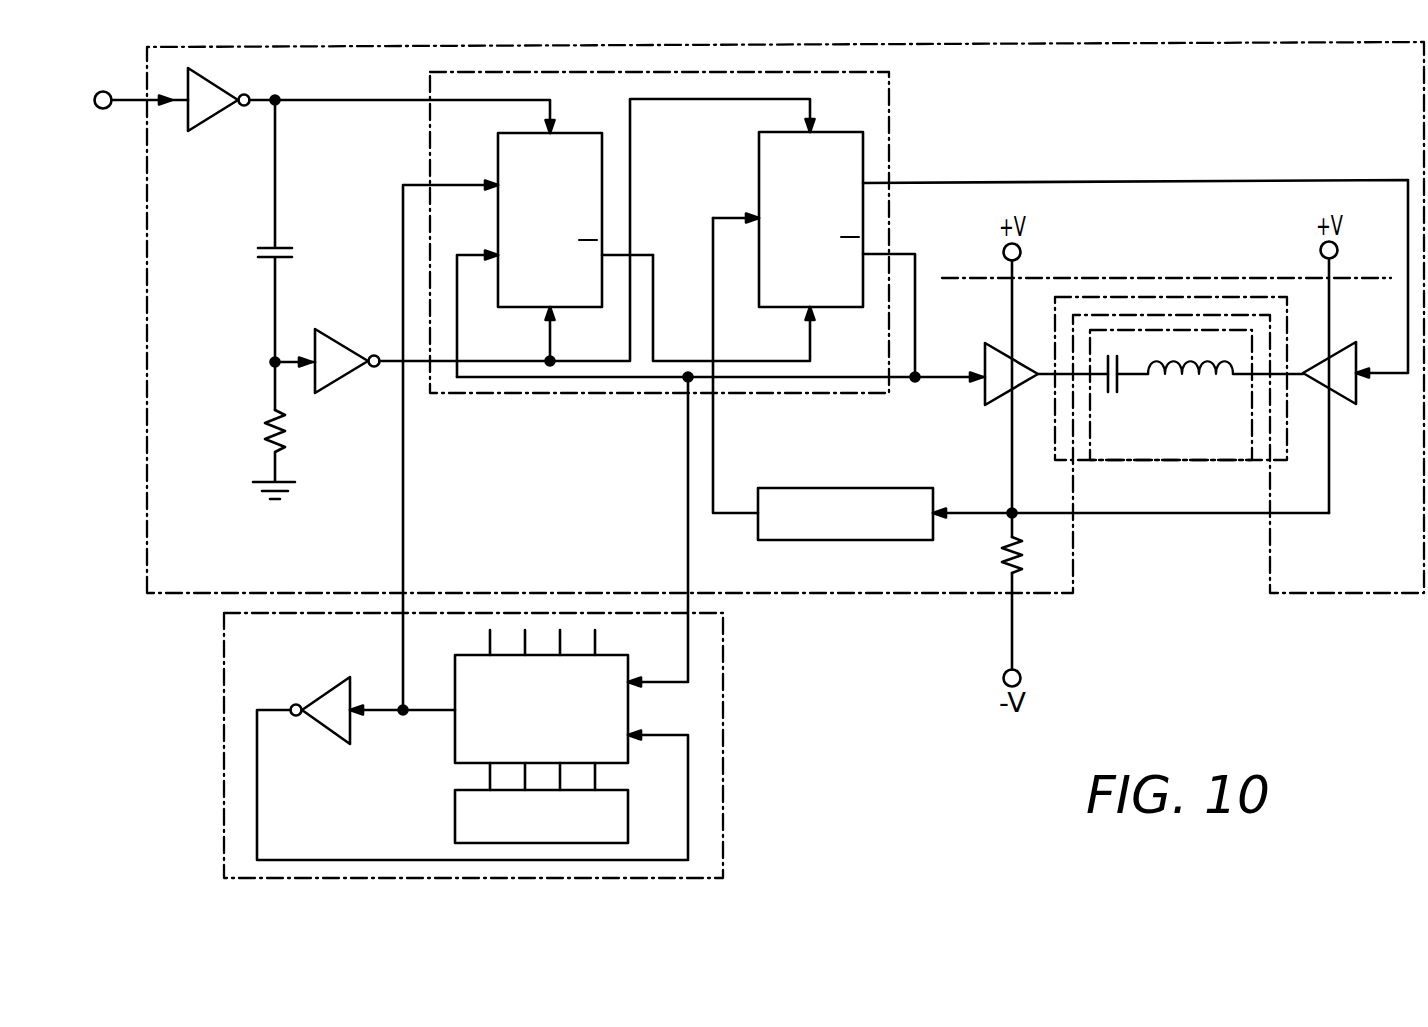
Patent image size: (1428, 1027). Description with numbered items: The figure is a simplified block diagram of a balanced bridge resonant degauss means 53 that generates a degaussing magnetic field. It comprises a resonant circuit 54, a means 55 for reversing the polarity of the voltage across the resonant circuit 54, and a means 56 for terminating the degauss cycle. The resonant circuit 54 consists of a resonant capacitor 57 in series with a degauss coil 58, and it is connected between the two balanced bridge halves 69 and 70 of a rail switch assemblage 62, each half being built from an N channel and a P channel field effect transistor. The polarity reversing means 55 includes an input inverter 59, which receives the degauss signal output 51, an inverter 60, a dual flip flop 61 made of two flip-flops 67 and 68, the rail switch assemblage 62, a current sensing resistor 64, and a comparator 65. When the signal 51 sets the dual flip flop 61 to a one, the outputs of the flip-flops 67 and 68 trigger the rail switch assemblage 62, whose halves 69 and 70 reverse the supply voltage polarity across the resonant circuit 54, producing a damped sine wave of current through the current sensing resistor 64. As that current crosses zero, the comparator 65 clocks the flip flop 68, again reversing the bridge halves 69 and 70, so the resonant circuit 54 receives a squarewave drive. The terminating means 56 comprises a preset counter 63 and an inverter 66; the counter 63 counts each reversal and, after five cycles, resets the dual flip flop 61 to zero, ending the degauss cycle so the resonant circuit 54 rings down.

The output of degauss signal generating means 51 is at (103, 109).
The balanced bridge resonant degauss means 53 is at (1184, 729).
The resonant circuit 54 is at (1183, 461).
The means for reversing the polarity of the voltage across the resonant circuit 55 is at (1318, 597).
The means for terminating the degauss cycle 56 is at (740, 711).
The resonant capacitor 57 is at (1117, 393).
The degauss coil 58 is at (1190, 382).
The input inverter 59 is at (206, 118).
The inverter 60 is at (338, 378).
The dual flip flop 61 is at (889, 150).
The rail switch assemblage 62 is at (1164, 278).
The preset counter 63 is at (456, 745).
The current sensing resistor 64 is at (1001, 568).
The comparator 65 is at (846, 488).
The inverter 66 is at (332, 730).
The flip-flop 67 is at (498, 165).
The flip-flop 68 is at (758, 165).
The bridge half 69 is at (986, 345).
The bridge half 70 is at (1347, 343).